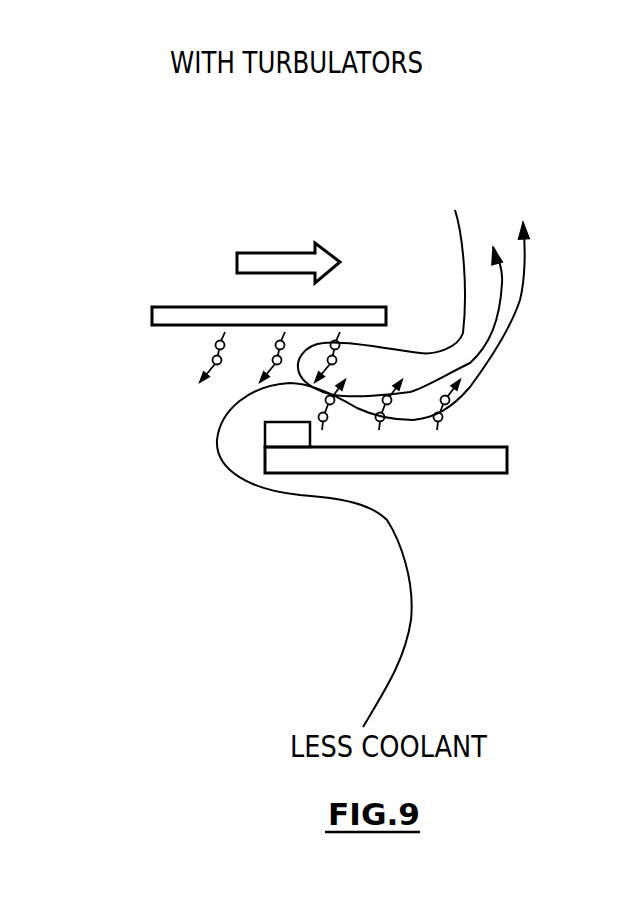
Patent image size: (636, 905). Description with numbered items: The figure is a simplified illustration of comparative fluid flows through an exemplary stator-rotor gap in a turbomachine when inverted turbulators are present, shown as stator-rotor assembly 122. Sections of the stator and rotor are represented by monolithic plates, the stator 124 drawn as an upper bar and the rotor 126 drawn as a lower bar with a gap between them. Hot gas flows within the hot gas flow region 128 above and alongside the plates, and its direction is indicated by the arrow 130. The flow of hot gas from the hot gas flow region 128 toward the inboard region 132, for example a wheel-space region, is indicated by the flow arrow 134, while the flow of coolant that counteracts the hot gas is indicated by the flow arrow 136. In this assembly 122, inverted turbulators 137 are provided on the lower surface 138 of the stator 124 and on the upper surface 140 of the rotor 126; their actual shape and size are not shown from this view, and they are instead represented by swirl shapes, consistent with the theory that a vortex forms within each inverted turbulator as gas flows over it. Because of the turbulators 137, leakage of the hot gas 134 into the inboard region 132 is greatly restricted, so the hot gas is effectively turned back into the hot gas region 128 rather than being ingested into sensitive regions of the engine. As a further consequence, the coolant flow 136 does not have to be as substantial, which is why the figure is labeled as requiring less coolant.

The stator-rotor assembly 122 is at (178, 260).
The stator 124 is at (363, 306).
The rotor 126 is at (312, 447).
The hot gas flow region 128 is at (388, 149).
The arrow 130 is at (280, 250).
The inboard region 132 is at (290, 682).
The flow arrow 134 is at (460, 227).
The flow arrow 136 is at (413, 593).
The inverted turbulators 137 is at (220, 333).
The lower surface 138 is at (165, 327).
The upper surface 140 is at (492, 445).